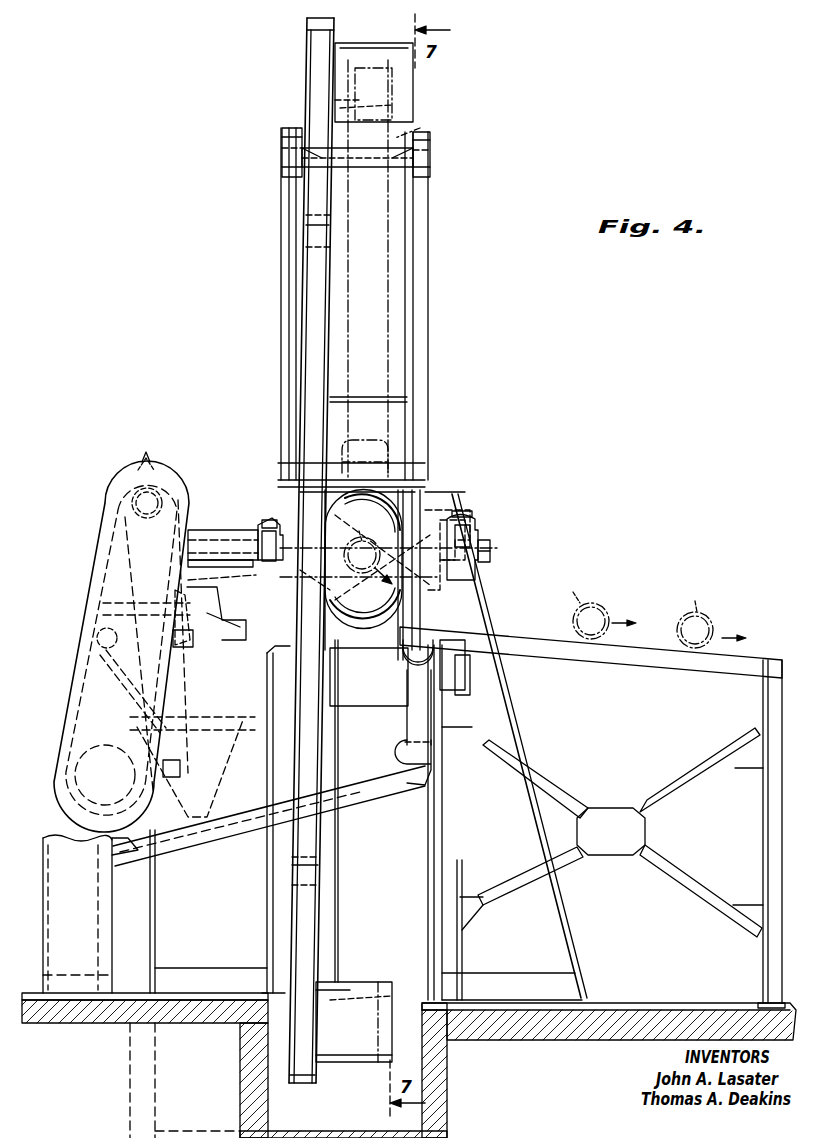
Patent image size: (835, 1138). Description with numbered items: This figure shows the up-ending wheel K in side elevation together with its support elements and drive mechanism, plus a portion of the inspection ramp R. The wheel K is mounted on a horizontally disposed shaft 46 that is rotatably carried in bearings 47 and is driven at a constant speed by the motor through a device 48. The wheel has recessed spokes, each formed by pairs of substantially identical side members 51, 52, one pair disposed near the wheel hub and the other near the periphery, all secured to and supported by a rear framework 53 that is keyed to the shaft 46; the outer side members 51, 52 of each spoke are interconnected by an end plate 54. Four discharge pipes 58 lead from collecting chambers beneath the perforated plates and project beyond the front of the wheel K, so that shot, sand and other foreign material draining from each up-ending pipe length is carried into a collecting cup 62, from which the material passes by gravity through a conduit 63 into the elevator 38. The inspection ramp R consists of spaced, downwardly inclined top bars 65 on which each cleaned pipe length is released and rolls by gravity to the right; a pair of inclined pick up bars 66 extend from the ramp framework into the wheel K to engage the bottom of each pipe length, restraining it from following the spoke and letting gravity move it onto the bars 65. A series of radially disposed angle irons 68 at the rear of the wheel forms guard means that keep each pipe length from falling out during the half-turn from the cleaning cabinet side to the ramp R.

The elevator 38 is at (112, 930).
The shaft 46 is at (234, 536).
The bearings 47 is at (255, 530).
The device 48 is at (125, 482).
The side members 51 is at (360, 620).
The side members 52 is at (424, 481).
The rear framework 53 is at (308, 88).
The end plate 54 is at (396, 43).
The discharge pipes 58 is at (437, 507).
The collecting cup 62 is at (405, 660).
The conduit 63 is at (377, 778).
The top bars 65 is at (622, 666).
The pick up bars 66 is at (400, 620).
The angle irons 68 is at (282, 337).
The up-ending wheel K is at (433, 297).
The inspection ramp R is at (786, 680).